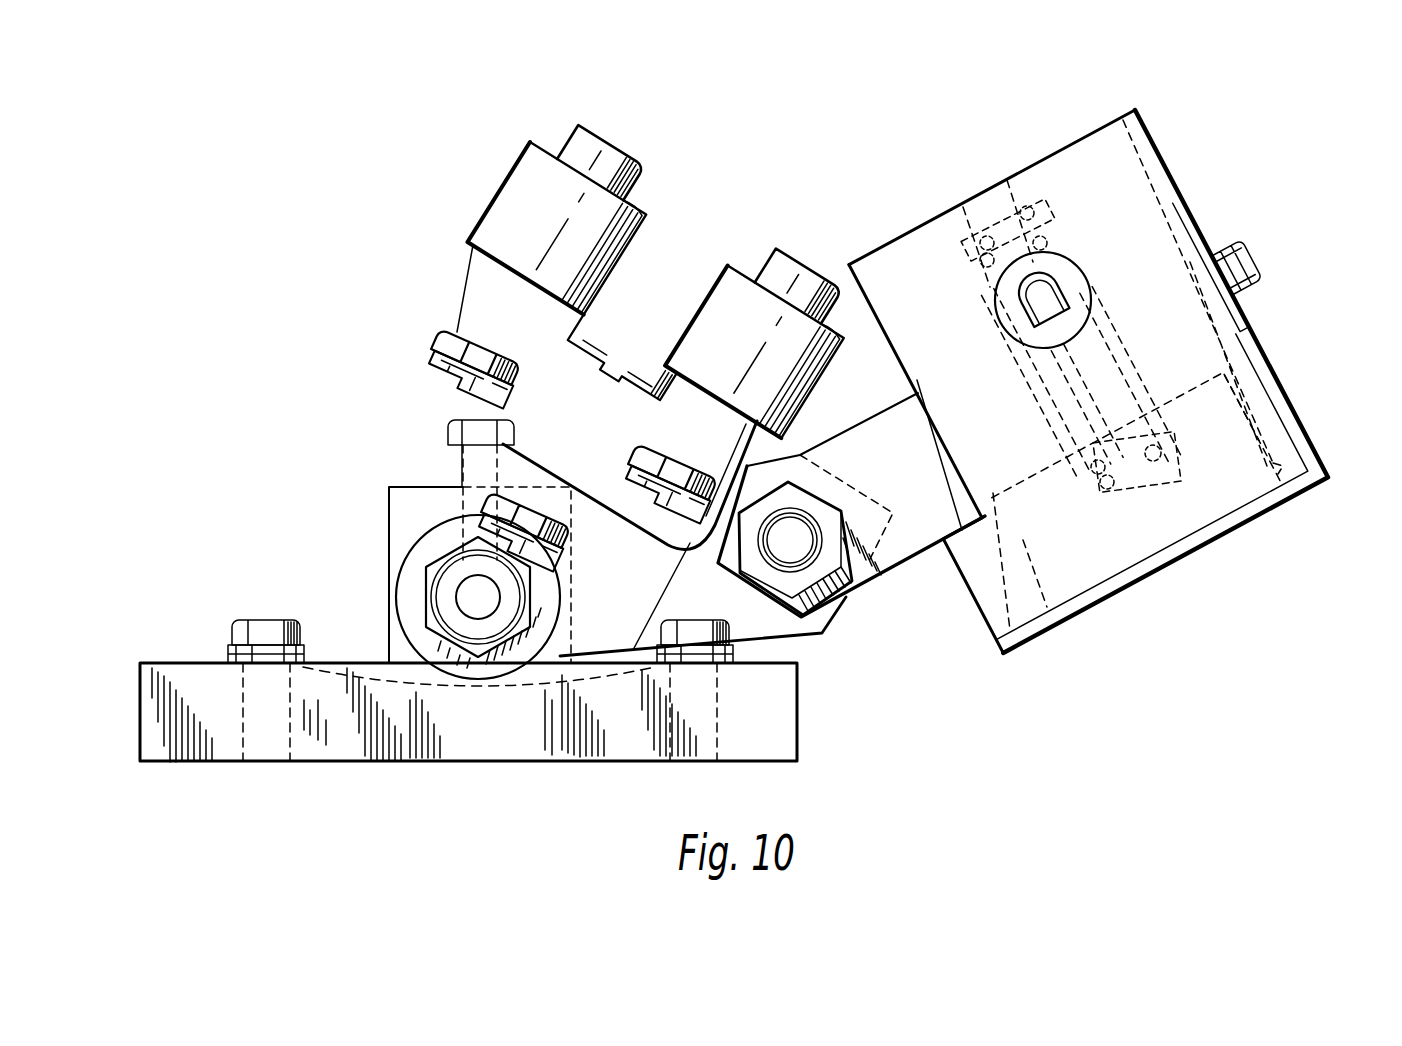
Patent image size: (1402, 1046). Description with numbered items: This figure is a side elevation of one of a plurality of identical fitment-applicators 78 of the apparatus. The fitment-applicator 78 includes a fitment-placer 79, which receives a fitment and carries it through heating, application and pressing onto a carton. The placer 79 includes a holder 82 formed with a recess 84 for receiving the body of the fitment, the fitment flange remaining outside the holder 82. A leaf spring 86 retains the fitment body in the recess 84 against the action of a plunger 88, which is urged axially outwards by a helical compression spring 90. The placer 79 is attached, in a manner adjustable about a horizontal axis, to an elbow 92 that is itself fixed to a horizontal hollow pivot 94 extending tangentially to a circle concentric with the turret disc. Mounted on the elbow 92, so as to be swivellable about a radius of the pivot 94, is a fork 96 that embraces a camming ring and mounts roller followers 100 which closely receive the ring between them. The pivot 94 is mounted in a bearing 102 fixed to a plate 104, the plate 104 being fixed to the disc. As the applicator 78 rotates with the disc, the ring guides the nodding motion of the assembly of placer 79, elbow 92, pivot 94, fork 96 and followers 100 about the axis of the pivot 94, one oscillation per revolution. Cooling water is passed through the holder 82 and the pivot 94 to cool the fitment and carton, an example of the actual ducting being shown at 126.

The fitment-applicator 78 is at (410, 449).
The fitment-placer 79 is at (1193, 347).
The holder 82 is at (1130, 178).
The recess 84 is at (975, 547).
The leaf spring 86 is at (1288, 397).
The plunger 88 is at (1147, 477).
The helical compression spring 90 is at (1101, 313).
The elbow 92 is at (785, 623).
The pivot 94 is at (445, 598).
The fork 96 is at (487, 305).
The roller followers 100 is at (722, 300).
The bearing 102 is at (403, 517).
The plate 104 is at (413, 743).
The ducting 126 is at (1027, 315).